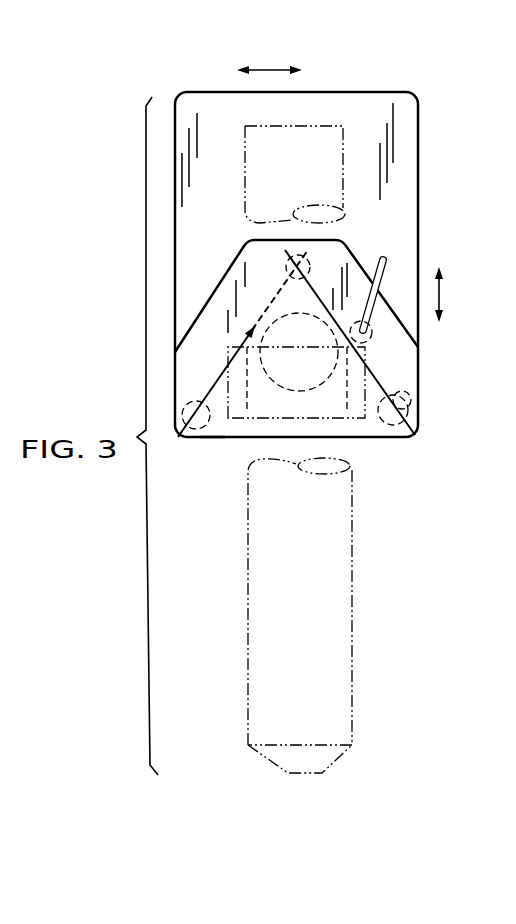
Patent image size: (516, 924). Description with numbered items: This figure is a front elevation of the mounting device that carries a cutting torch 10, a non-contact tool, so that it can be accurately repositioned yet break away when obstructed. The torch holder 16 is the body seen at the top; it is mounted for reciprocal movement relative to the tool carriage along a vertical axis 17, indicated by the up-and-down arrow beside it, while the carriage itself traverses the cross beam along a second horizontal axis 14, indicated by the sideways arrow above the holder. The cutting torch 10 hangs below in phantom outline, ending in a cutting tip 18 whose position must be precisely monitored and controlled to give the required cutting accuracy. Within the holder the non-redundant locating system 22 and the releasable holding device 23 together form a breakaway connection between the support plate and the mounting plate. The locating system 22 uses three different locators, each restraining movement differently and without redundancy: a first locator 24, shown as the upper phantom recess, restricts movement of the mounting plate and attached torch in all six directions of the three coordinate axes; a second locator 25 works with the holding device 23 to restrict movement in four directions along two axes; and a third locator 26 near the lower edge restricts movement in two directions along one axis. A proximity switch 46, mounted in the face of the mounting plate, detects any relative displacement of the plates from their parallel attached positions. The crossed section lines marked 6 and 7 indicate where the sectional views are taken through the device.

The section line 6- 6 is at (307, 250).
The section line 7- 7 is at (285, 250).
The cutting torch 10 is at (337, 648).
The second horizontal axis 14 is at (267, 68).
The torch holder 16 is at (421, 84).
The vertical axis 17 is at (441, 293).
The cutting tip 18 is at (325, 772).
The non-redundant locating system 22 is at (208, 264).
The releasable holding device 23 is at (250, 333).
The first locator 24 is at (307, 243).
The second locator 25 is at (405, 397).
The third locator 26 is at (212, 441).
The proximity switch 46 is at (367, 337).